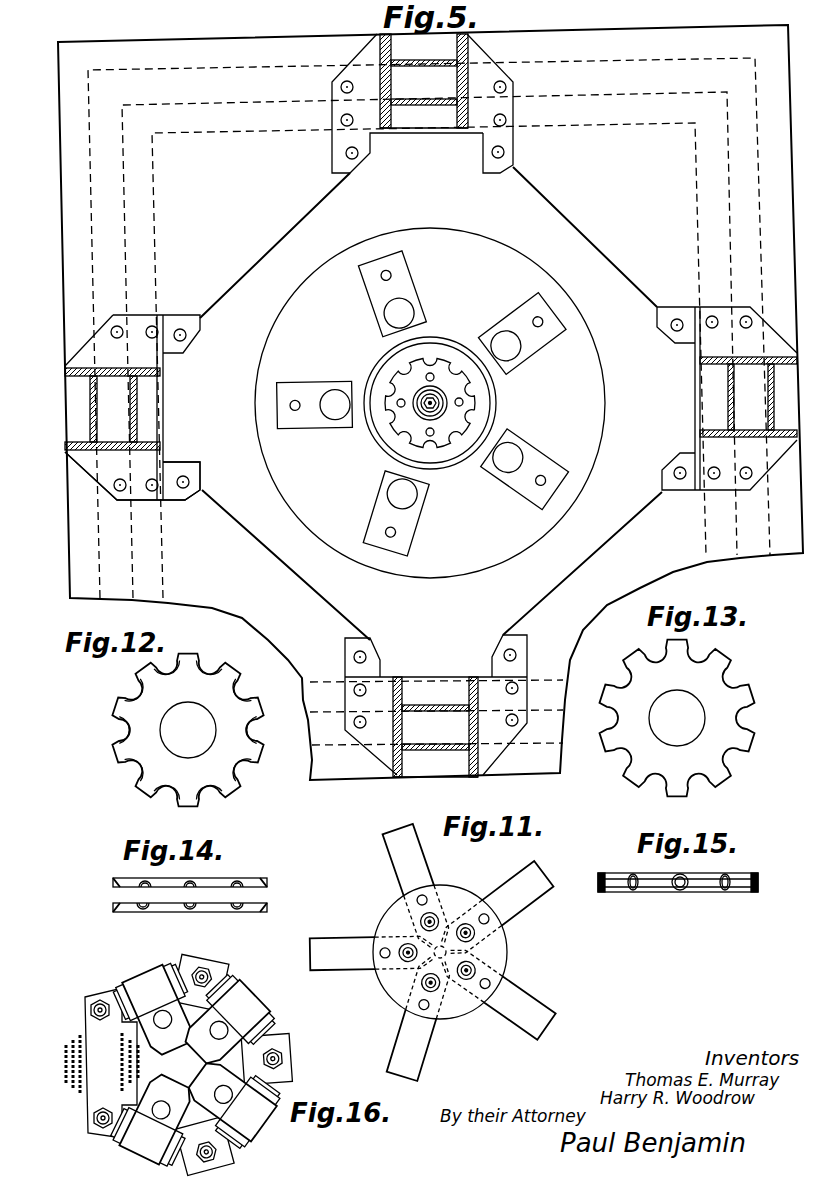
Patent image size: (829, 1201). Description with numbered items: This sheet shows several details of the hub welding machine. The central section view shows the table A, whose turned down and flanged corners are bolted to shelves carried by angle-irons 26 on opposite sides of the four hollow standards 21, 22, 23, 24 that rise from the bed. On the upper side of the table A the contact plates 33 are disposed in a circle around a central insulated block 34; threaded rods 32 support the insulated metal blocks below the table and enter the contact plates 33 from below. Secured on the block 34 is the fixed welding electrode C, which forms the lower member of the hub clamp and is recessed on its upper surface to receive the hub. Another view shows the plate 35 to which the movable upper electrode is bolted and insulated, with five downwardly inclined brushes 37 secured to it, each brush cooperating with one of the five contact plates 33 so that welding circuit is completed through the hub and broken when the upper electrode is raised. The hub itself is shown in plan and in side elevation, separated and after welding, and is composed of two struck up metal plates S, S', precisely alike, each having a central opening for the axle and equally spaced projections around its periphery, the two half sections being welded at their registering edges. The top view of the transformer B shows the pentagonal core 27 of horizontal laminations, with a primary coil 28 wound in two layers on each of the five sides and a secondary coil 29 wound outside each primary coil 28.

In FIG. 5, the hollow standard 21 is at (422, 103).
In FIG. 5, the hollow standard 22 is at (436, 706).
In FIG. 5, the hollow standard 23 is at (132, 407).
In FIG. 5, the hollow standard 24 is at (675, 512).
In FIG. 5, the angle-iron 26 is at (145, 503).
In FIG. 5, the threaded rod 32 is at (398, 314).
In FIG. 5, the contact plate 33 is at (407, 272).
In FIG. 5, the central insulated block 34 is at (496, 396).
In FIG. 5, the fixed welding electrode C is at (473, 412).
In FIG. 5, the table A is at (430, 402).
In FIG. 11, the plate 35 is at (507, 955).
In FIG. 11, the brush 37 is at (538, 897).
In FIG. 12, the struck up metal plate S is at (187, 730).
In FIG. 14, the struck up metal plate S is at (203, 880).
In FIG. 15, the struck up metal plate S is at (687, 873).
In FIG. 13, the struck up metal plate S' is at (677, 718).
In FIG. 14, the struck up metal plate S' is at (205, 907).
In FIG. 15, the struck up metal plate S' is at (771, 893).
In FIG. 16, the pentagonal core 27 is at (215, 963).
In FIG. 16, the primary coil 28 is at (78, 1033).
In FIG. 16, the secondary coil 29 is at (70, 1085).
In FIG. 16, the transformer B is at (197, 1064).